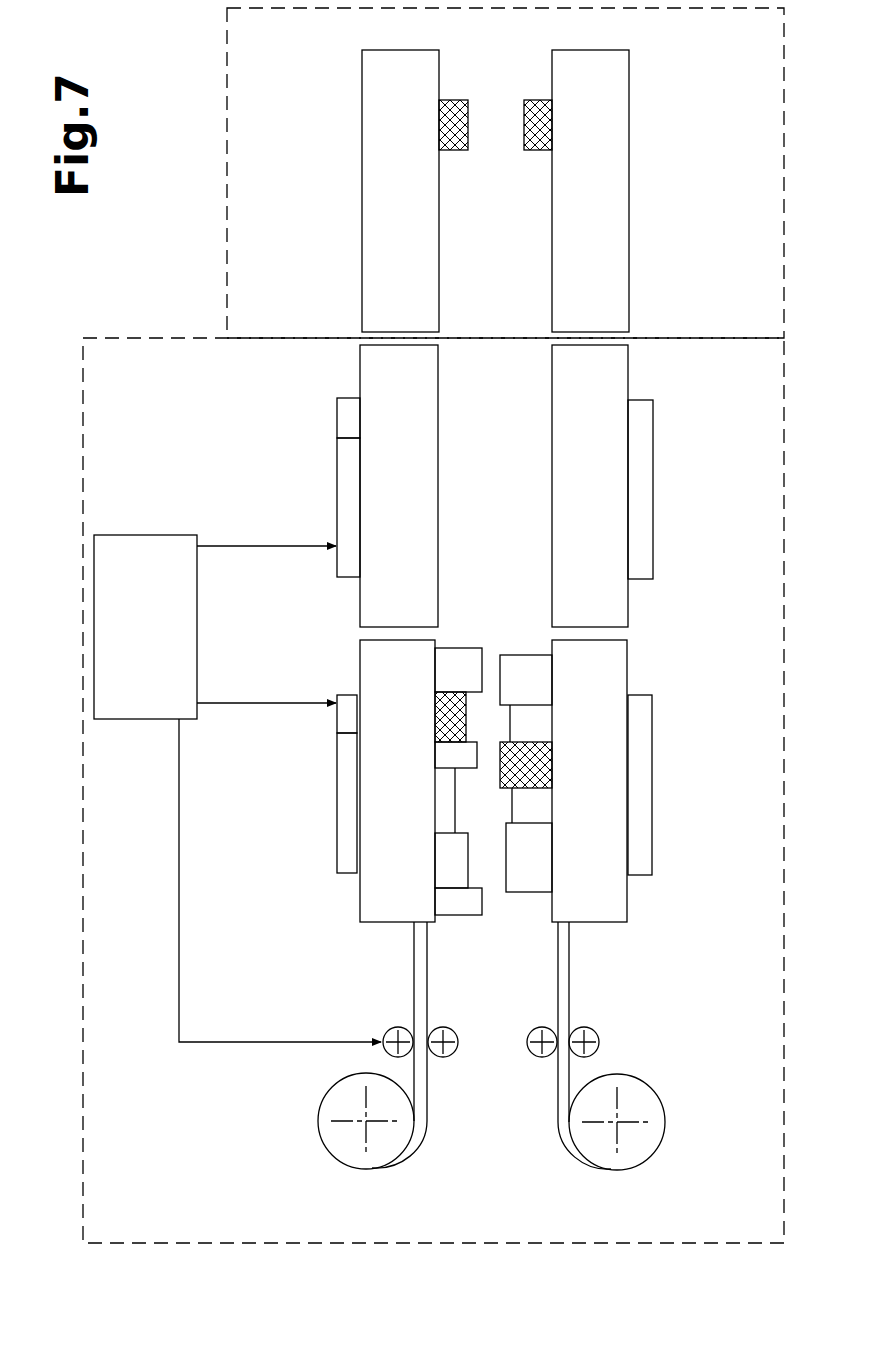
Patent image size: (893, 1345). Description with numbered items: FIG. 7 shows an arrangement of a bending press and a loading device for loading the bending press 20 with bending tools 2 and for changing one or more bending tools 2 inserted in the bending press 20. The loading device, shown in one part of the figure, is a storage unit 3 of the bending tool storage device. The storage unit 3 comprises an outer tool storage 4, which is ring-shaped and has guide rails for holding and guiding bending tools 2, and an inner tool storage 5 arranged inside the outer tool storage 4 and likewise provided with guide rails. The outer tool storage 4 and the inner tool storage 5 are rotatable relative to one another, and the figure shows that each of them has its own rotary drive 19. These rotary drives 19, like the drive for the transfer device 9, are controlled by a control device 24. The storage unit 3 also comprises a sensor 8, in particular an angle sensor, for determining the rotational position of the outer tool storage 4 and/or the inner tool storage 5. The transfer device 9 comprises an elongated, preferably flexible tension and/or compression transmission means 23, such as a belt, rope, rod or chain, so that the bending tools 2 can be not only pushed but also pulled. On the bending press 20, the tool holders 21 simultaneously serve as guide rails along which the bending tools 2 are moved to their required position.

The bending tool 2 is at (463, 100).
The storage unit 3 is at (74, 870).
The outer tool storage 4 is at (407, 478).
The inner tool storage 5 is at (405, 772).
The sensor 8 is at (337, 423).
The transfer device 9 is at (382, 993).
The rotary drive 19 is at (337, 497).
The bending press 20 is at (222, 190).
The tool holder 21 is at (410, 173).
The tension and/or compression transmission means 23 is at (414, 957).
The control device 24 is at (157, 650).